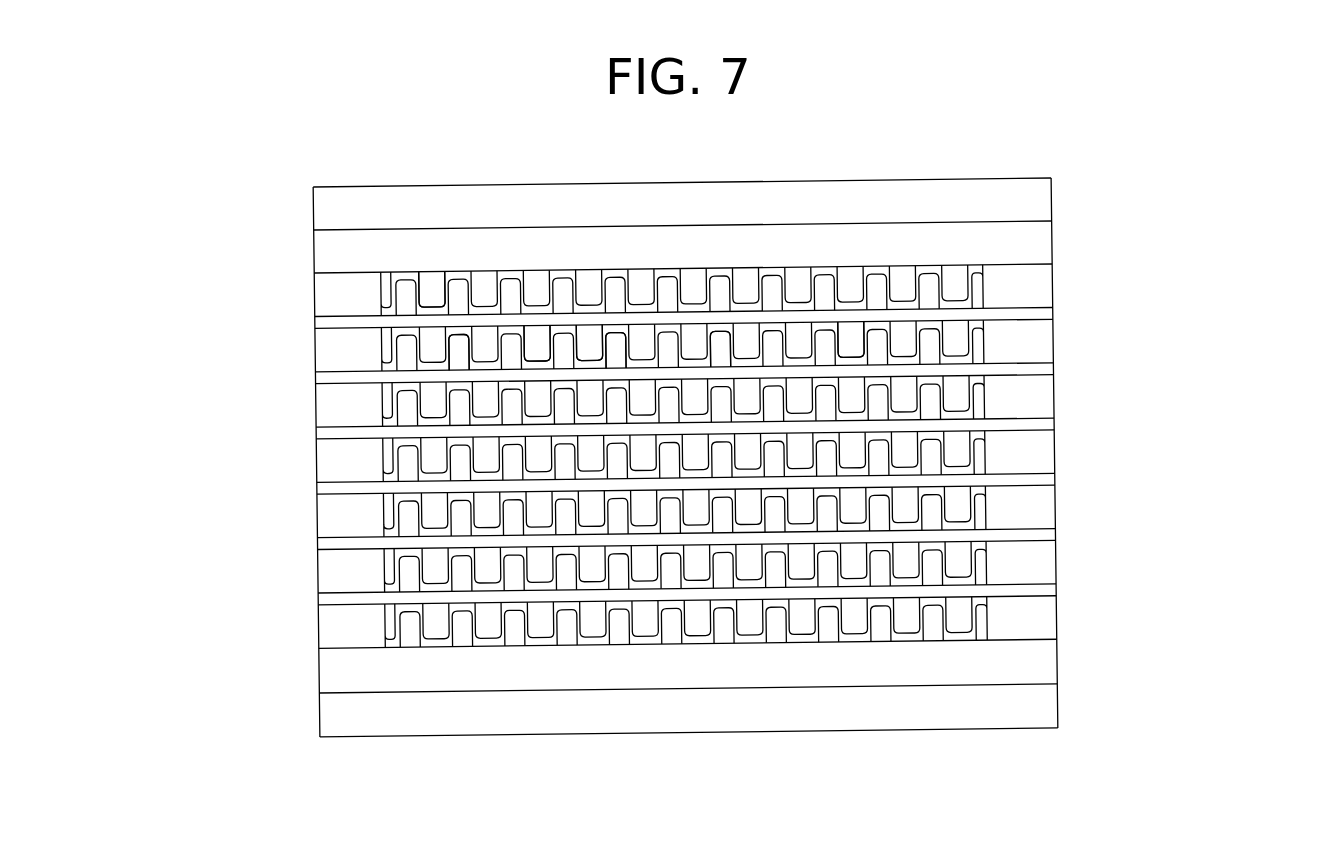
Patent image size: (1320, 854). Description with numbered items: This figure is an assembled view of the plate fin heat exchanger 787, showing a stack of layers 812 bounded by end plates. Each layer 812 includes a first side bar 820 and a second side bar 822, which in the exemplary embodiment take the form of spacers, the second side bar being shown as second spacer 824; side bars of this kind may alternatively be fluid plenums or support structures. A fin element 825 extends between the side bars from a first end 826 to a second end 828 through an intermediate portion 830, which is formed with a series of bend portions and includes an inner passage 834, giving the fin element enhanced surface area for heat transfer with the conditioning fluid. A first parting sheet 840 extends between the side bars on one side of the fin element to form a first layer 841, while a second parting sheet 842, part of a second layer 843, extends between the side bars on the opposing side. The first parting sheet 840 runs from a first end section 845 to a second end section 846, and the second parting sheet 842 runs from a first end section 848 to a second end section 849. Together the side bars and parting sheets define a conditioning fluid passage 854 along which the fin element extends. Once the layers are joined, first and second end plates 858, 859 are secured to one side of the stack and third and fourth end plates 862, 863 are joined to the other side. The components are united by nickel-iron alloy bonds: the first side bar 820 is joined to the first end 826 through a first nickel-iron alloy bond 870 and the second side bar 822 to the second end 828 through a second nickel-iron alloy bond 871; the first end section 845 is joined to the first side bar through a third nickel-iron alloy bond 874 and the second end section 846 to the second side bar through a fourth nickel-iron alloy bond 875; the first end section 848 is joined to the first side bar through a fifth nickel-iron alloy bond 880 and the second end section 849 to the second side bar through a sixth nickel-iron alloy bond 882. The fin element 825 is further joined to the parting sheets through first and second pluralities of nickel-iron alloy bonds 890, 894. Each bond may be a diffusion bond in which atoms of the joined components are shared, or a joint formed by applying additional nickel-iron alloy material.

The interdigitated electrode device 787 is at (212, 127).
The layer 812 is at (1082, 377).
The first side bar 820 is at (300, 362).
The second side bar 822 is at (1065, 353).
The second spacer 824 is at (1038, 355).
The fin element 825 is at (438, 308).
The first end 826 is at (388, 400).
The second end 828 is at (997, 310).
The intermediate portion 830 is at (723, 325).
The inner passage 834 is at (622, 323).
The first parting sheet 840 is at (398, 317).
The first layer 841 is at (352, 375).
The second parting sheet 842 is at (383, 410).
The second layer 843 is at (383, 392).
The first end section 845 is at (313, 323).
The second end section 846 is at (1047, 313).
The first end section 848 is at (300, 393).
The second end section 849 is at (1023, 372).
The conditioning fluid passage 854 is at (612, 336).
The first end plate 858 is at (1060, 197).
The second end plate 859 is at (1060, 244).
The third end plate 862 is at (1063, 709).
The fourth end plate 863 is at (1062, 661).
The first nickel-iron alloy bond 870 is at (385, 360).
The second nickel-iron alloy bond 871 is at (983, 327).
The third nickel-iron alloy bond 874 is at (313, 348).
The fourth nickel-iron alloy bond 875 is at (1037, 322).
The fifth nickel-iron alloy bond 880 is at (330, 418).
The connection 882 is at (998, 367).
The first plurality of nickel-iron alloy bonds 890 is at (463, 325).
The second plurality of nickel-iron alloy bonds 894 is at (540, 367).